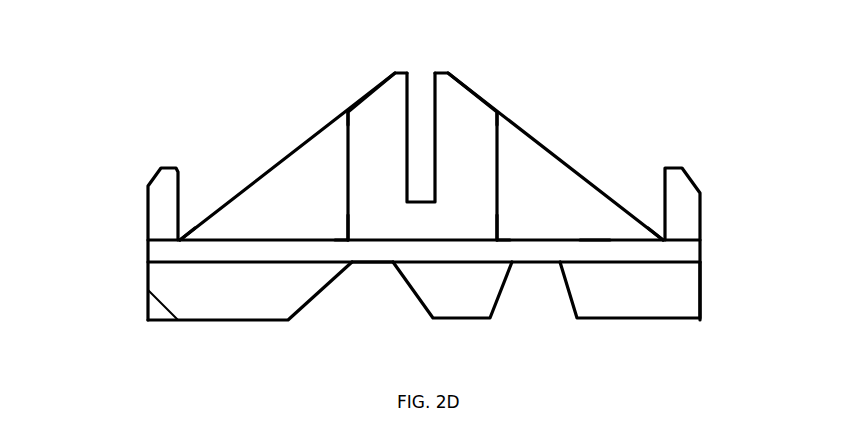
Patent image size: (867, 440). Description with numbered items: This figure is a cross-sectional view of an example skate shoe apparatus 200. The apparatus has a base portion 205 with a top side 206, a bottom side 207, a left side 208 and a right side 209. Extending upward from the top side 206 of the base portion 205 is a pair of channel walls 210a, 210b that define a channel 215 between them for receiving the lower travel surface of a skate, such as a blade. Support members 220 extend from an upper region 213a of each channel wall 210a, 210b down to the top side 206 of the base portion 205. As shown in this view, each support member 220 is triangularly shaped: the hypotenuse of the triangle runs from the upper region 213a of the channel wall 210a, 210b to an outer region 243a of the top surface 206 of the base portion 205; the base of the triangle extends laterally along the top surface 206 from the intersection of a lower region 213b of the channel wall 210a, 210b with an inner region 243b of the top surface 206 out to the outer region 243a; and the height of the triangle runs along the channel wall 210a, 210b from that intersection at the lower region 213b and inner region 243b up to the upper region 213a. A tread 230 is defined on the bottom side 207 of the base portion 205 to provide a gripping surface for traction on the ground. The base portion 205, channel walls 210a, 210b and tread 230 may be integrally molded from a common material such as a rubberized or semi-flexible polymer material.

The skate shoe apparatus 200 is at (630, 43).
The base portion 205 is at (668, 248).
The top side 206 is at (593, 240).
The bottom side 207 is at (375, 263).
The left side 208 is at (147, 243).
The right side 209 is at (700, 242).
The channel wall 210a is at (373, 100).
The channel wall 210b is at (468, 97).
The upper region 213a is at (343, 122).
The lower region 213b is at (343, 218).
The channel 215 is at (420, 85).
The support members 220 is at (297, 150).
The tread 230 is at (183, 308).
The outer region 243a is at (200, 234).
The inner region 243b is at (338, 232).